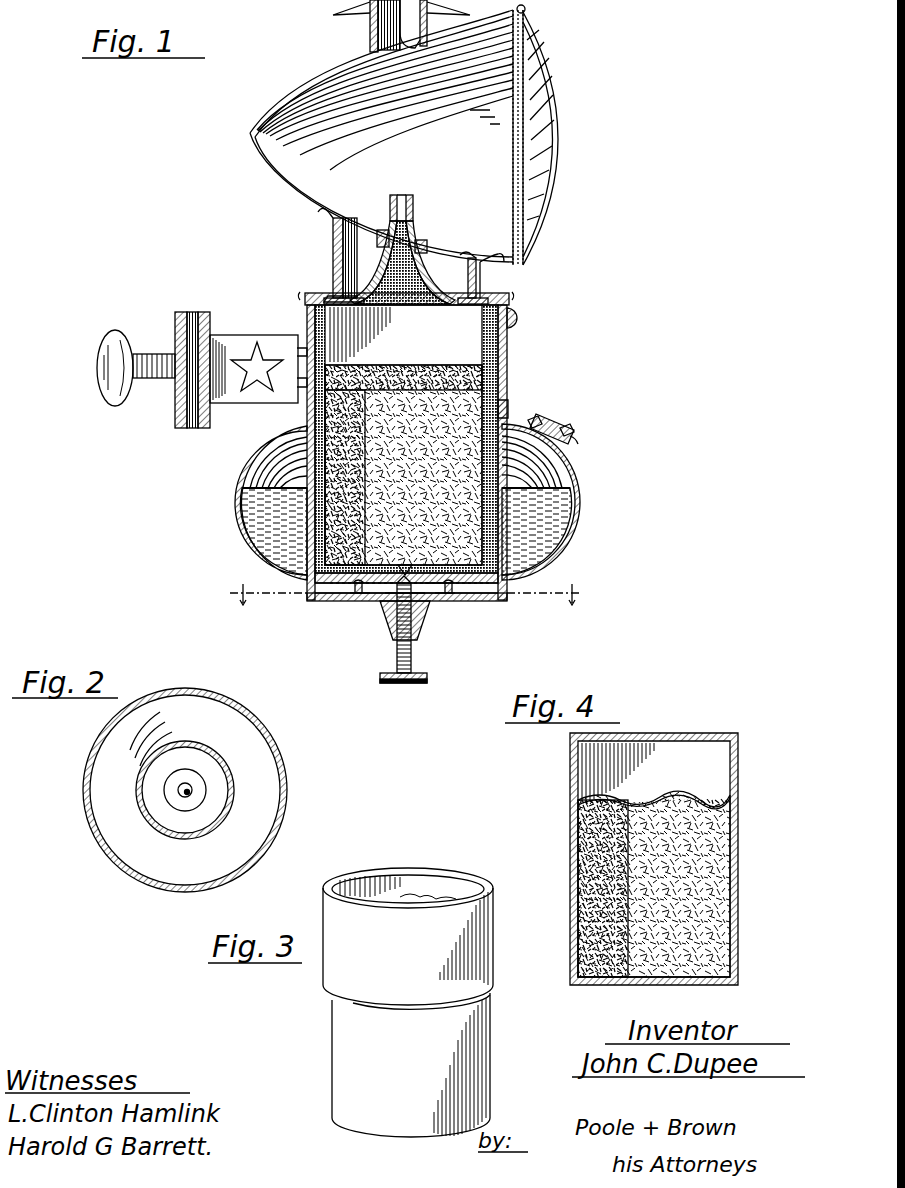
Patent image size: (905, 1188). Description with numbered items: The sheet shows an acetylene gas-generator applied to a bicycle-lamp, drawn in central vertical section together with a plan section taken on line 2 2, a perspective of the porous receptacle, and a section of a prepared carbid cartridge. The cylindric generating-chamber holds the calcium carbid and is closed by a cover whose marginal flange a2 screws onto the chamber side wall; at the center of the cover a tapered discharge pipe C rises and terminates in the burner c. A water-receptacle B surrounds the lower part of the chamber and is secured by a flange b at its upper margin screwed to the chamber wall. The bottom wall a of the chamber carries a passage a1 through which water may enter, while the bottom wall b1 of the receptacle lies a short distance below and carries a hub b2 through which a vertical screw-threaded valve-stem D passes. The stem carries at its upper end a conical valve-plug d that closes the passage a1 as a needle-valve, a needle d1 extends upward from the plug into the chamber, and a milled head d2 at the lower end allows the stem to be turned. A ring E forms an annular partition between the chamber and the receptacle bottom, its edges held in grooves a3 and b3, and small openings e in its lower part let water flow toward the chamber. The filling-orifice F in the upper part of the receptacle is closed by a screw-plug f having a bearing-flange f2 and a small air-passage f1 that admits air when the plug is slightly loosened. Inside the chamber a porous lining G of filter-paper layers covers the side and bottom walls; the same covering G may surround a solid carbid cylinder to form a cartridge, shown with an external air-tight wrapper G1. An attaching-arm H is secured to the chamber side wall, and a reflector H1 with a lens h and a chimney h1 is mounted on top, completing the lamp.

In FIG. 1, the reflector H1 is at (536, 274).
In FIG. 1, the chimney h1 is at (401, 26).
In FIG. 1, the lens h is at (535, 135).
In FIG. 1, the burner c is at (410, 197).
In FIG. 1, the discharge pipe C is at (415, 226).
In FIG. 1, the attaching-arm H is at (227, 347).
In FIG. 1, the marginal flange a2 is at (513, 314).
In FIG. 1, the porous lining G is at (500, 468).
In FIG. 4, the porous lining G is at (673, 733).
In FIG. 4, the external air-tight wrapper G1 is at (740, 789).
In FIG. 1, the water-receptacle B is at (543, 482).
In FIG. 1, the flange b is at (508, 408).
In FIG. 1, the filling-orifice F is at (570, 440).
In FIG. 1, the air-passage f1 is at (543, 422).
In FIG. 1, the screw-plug f is at (568, 428).
In FIG. 1, the bearing-flange f2 is at (572, 436).
In FIG. 1, the needle d1 is at (402, 565).
In FIG. 1, the groove a3 is at (340, 585).
In FIG. 1, the bottom wall a is at (340, 587).
In FIG. 1, the passage a1 is at (443, 610).
In FIG. 1, the small openings e is at (345, 588).
In FIG. 2, the small openings e is at (228, 806).
In FIG. 1, the ring E is at (343, 583).
In FIG. 2, the ring E is at (222, 768).
In FIG. 1, the groove b3 is at (357, 603).
In FIG. 1, the hub b2 is at (387, 610).
In FIG. 1, the bottom wall b1 is at (440, 593).
In FIG. 1, the conical valve-plug d is at (380, 607).
In FIG. 1, the valve-stem D is at (412, 652).
In FIG. 1, the milled head d2 is at (385, 680).
In FIG. 1, the section line 2 is at (406, 594).